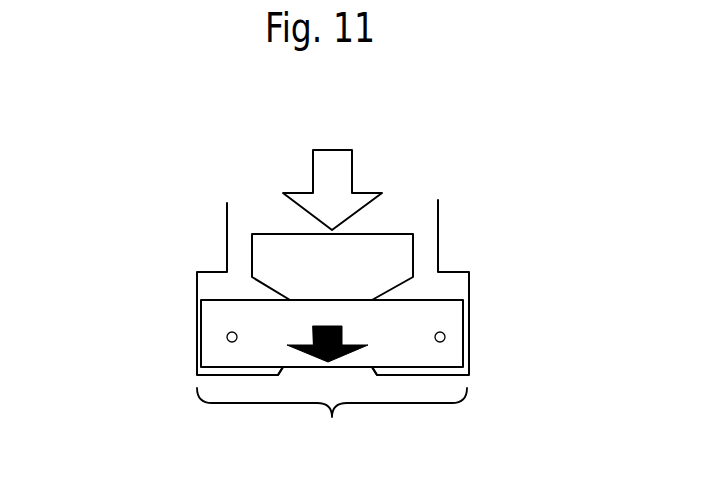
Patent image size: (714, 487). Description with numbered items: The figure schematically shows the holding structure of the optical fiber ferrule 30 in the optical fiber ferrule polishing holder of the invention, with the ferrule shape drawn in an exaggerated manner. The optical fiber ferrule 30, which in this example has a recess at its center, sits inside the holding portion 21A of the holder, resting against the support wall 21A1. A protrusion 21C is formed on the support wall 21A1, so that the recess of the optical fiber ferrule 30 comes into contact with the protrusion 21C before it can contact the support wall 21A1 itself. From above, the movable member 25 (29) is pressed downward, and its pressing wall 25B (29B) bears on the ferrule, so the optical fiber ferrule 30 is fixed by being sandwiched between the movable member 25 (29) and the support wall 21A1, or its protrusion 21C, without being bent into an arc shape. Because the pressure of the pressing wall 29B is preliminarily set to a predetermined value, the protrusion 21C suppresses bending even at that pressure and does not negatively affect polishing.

The movable member 25 is at (387, 235).
The movable member 29 is at (428, 228).
The pressing wall 25B is at (328, 297).
The pressing wall 29B is at (203, 263).
The holding portion 21A is at (421, 281).
The support wall 21A1 is at (332, 423).
The protrusion 21C is at (315, 373).
The optical fiber ferrule 30 is at (398, 350).